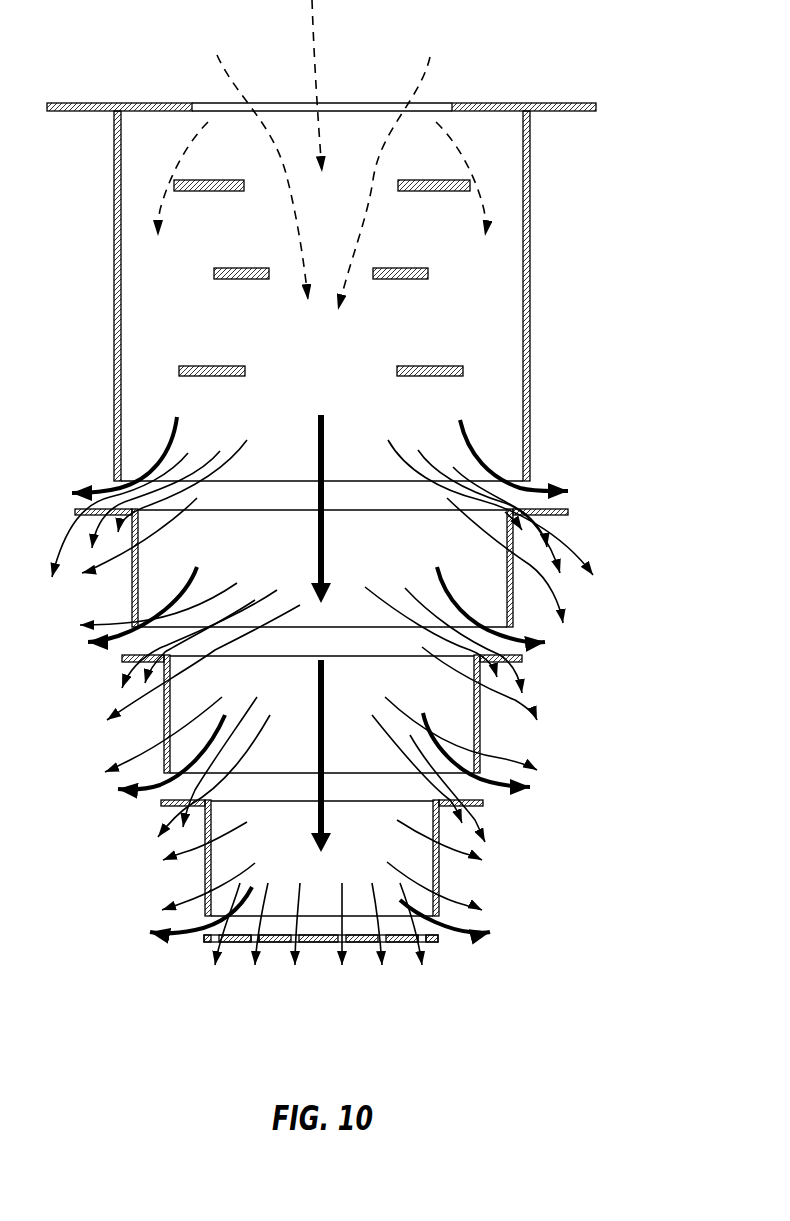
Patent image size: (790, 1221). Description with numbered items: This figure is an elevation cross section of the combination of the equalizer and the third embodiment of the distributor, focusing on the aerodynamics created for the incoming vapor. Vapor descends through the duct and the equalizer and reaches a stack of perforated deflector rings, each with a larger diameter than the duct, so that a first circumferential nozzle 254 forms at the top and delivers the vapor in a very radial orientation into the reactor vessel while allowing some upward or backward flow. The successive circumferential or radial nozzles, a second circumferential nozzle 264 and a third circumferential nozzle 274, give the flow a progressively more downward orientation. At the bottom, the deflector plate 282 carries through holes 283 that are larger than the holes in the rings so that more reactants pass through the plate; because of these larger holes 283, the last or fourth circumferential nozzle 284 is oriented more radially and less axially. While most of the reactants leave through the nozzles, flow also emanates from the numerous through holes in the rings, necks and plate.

The first circumferential nozzle 254 is at (537, 481).
The second circumferential nozzle 264 is at (524, 658).
The third circumferential nozzle 274 is at (485, 793).
The deflector plate 282 is at (322, 943).
The through holes 283 is at (263, 943).
The fourth circumferential nozzle 284 is at (446, 936).